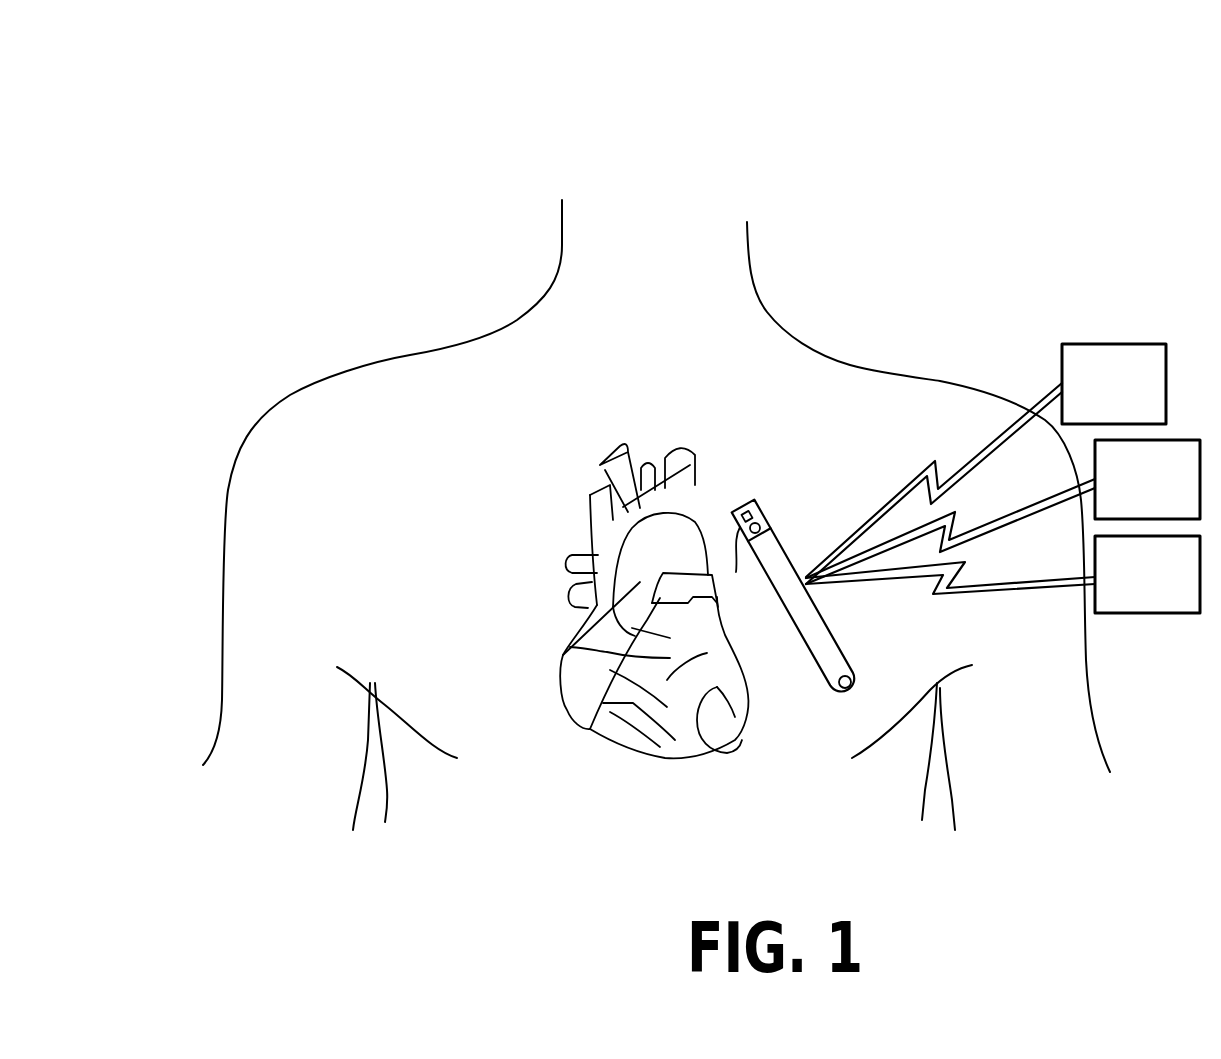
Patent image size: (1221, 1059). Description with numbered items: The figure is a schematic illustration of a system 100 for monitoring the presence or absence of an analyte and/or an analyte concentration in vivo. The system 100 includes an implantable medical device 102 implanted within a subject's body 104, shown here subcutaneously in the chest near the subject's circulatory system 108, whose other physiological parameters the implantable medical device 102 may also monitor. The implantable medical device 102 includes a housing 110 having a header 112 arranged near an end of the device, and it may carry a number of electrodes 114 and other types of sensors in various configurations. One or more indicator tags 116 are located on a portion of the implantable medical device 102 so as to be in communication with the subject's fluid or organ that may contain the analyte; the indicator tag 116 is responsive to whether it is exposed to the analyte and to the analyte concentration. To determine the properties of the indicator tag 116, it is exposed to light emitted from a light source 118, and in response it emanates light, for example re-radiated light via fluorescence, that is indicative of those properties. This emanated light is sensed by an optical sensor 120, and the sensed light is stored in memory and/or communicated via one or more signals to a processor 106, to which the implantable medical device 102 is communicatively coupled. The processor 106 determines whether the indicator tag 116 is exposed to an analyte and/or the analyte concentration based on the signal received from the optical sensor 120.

The system 100 is at (392, 114).
The implantable medical device 102 is at (846, 620).
The subject's body 104 is at (403, 334).
The processor 106 is at (1094, 399).
The circulatory system 108 is at (548, 500).
The housing 110 is at (850, 700).
The header 112 is at (742, 562).
The electrodes 114 is at (761, 524).
The indicator tag 116 is at (752, 512).
The light source 118 is at (1128, 491).
The optical sensor 120 is at (1128, 585).